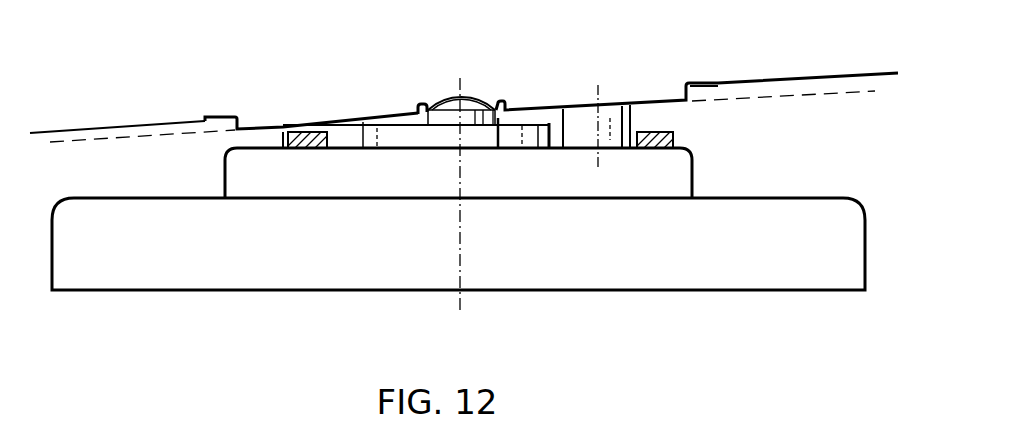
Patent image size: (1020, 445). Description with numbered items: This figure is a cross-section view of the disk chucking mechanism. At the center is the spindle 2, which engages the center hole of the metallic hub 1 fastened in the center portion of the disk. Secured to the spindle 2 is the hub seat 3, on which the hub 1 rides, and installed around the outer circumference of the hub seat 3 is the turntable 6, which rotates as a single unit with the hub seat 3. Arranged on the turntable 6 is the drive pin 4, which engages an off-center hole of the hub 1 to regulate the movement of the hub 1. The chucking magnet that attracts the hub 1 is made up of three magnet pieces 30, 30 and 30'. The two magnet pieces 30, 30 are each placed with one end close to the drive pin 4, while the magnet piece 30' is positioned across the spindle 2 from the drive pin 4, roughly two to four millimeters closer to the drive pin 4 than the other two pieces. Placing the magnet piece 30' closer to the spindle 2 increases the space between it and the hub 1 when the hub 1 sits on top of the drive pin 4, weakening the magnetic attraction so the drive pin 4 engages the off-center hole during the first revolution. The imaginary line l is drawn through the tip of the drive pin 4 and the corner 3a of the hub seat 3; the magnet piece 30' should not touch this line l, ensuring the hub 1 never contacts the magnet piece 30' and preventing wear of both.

The hub 1 is at (663, 100).
The spindle 2 is at (447, 107).
The hub seat 3 is at (547, 148).
The corner 3a is at (363, 127).
The drive pin 4 is at (577, 120).
The turntable 6 is at (676, 180).
The magnet piece 30 is at (445, 150).
The magnet piece 30' is at (254, 259).
The imaginary line l is at (860, 93).